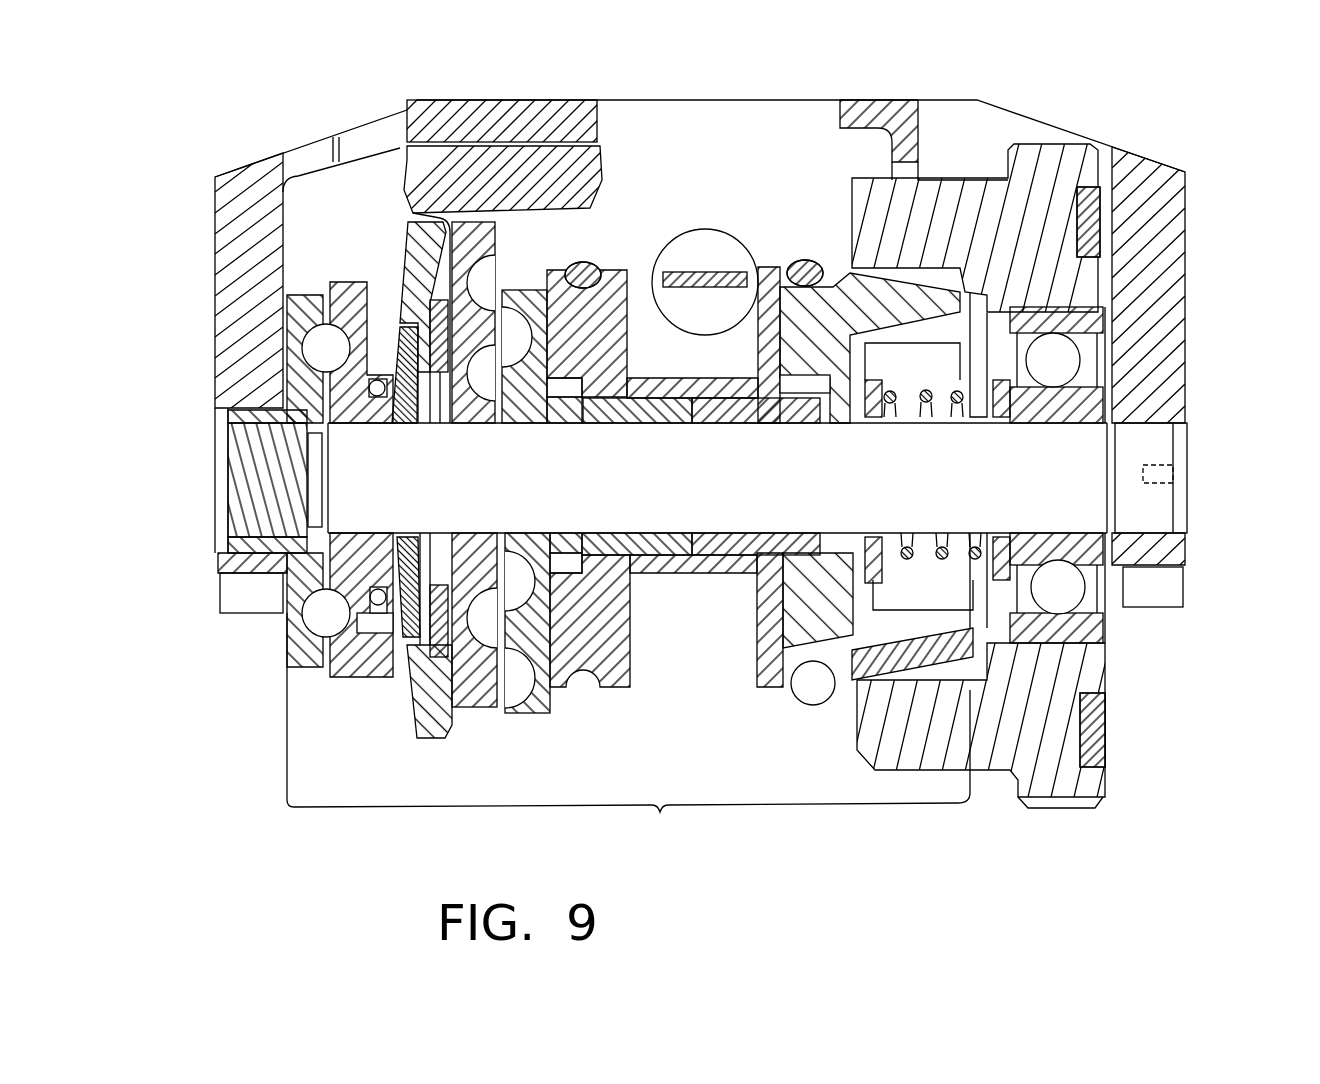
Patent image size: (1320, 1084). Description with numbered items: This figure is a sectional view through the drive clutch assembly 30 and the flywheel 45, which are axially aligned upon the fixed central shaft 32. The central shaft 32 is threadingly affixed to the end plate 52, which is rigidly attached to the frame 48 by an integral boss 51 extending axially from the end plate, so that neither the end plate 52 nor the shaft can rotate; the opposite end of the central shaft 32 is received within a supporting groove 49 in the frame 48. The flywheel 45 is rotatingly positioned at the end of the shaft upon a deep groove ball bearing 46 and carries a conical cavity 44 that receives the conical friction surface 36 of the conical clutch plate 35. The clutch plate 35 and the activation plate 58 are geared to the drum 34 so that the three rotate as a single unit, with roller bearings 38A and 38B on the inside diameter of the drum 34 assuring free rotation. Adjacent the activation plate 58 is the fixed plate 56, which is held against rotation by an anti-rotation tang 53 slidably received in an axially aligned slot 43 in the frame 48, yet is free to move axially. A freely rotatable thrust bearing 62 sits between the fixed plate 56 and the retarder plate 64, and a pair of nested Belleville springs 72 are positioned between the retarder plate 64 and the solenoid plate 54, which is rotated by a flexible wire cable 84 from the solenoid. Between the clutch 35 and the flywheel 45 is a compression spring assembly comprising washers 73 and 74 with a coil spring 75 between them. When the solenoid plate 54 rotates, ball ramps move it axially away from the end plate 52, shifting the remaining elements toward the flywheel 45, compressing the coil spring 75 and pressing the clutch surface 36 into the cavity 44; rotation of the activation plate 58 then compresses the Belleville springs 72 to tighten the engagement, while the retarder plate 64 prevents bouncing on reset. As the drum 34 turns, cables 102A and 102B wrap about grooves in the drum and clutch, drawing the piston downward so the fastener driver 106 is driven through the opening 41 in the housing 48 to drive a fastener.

The drive clutch assembly 30 is at (660, 812).
The central shaft 32 is at (679, 494).
The drum 34 is at (632, 650).
The conical clutch plate 35 is at (820, 700).
The conical friction surface 36 is at (850, 685).
The roller bearing 38A is at (655, 545).
The roller bearing 38B is at (727, 547).
The opening 41 is at (707, 228).
The axially aligned slot 43 is at (397, 185).
The conical cavity 44 is at (862, 732).
The flywheel 45 is at (1058, 173).
The deep groove ball bearing 46 is at (1110, 625).
The frame 48 is at (213, 285).
The supporting groove 49 is at (1145, 527).
The integral boss 51 is at (223, 417).
The end plate 52 is at (307, 670).
The anti-rotation tang 53 is at (603, 172).
The solenoid plate 54 is at (360, 675).
The fixed plate 56 is at (468, 710).
The activation plate 58 is at (543, 713).
The thrust bearing 62 is at (450, 423).
The retarder plate 64 is at (428, 740).
The Belleville springs 72 is at (388, 340).
The washer 73 is at (887, 370).
The washer 74 is at (1000, 583).
The coil spring 75 is at (905, 417).
The flexible wire cable 84 is at (378, 590).
The cable 102A is at (600, 263).
The cable 102B is at (823, 262).
The fastener driver 106 is at (710, 287).